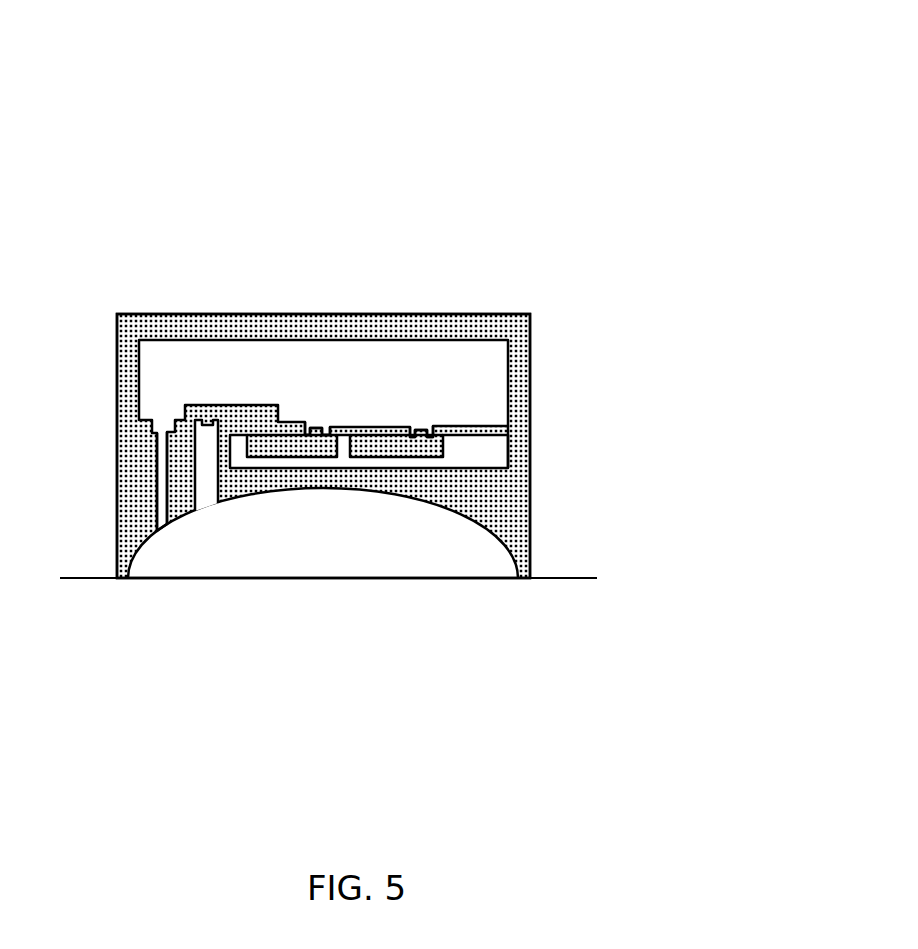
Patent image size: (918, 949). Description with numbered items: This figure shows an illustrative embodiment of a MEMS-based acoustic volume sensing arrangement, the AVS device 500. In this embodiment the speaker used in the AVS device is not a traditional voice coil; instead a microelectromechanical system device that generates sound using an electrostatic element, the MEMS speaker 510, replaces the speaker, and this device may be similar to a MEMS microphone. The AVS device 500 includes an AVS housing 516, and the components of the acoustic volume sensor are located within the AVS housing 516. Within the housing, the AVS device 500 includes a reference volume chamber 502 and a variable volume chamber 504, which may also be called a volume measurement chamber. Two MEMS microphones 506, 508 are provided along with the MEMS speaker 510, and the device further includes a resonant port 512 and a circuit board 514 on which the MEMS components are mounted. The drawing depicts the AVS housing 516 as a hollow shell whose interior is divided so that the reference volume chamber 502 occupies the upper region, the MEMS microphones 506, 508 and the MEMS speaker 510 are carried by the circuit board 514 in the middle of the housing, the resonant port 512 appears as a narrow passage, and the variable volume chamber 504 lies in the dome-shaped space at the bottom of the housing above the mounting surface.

The AVS device 500 is at (580, 44).
The reference volume chamber 502 is at (379, 360).
The variable volume chamber 504 is at (448, 562).
The MEMS microphone 506 is at (207, 425).
The MEMS microphone 508 is at (317, 428).
The MEMS speaker 510 is at (422, 430).
The resonant port 512 is at (162, 520).
The circuit board 514 is at (483, 423).
The AVS housing 516 is at (497, 535).